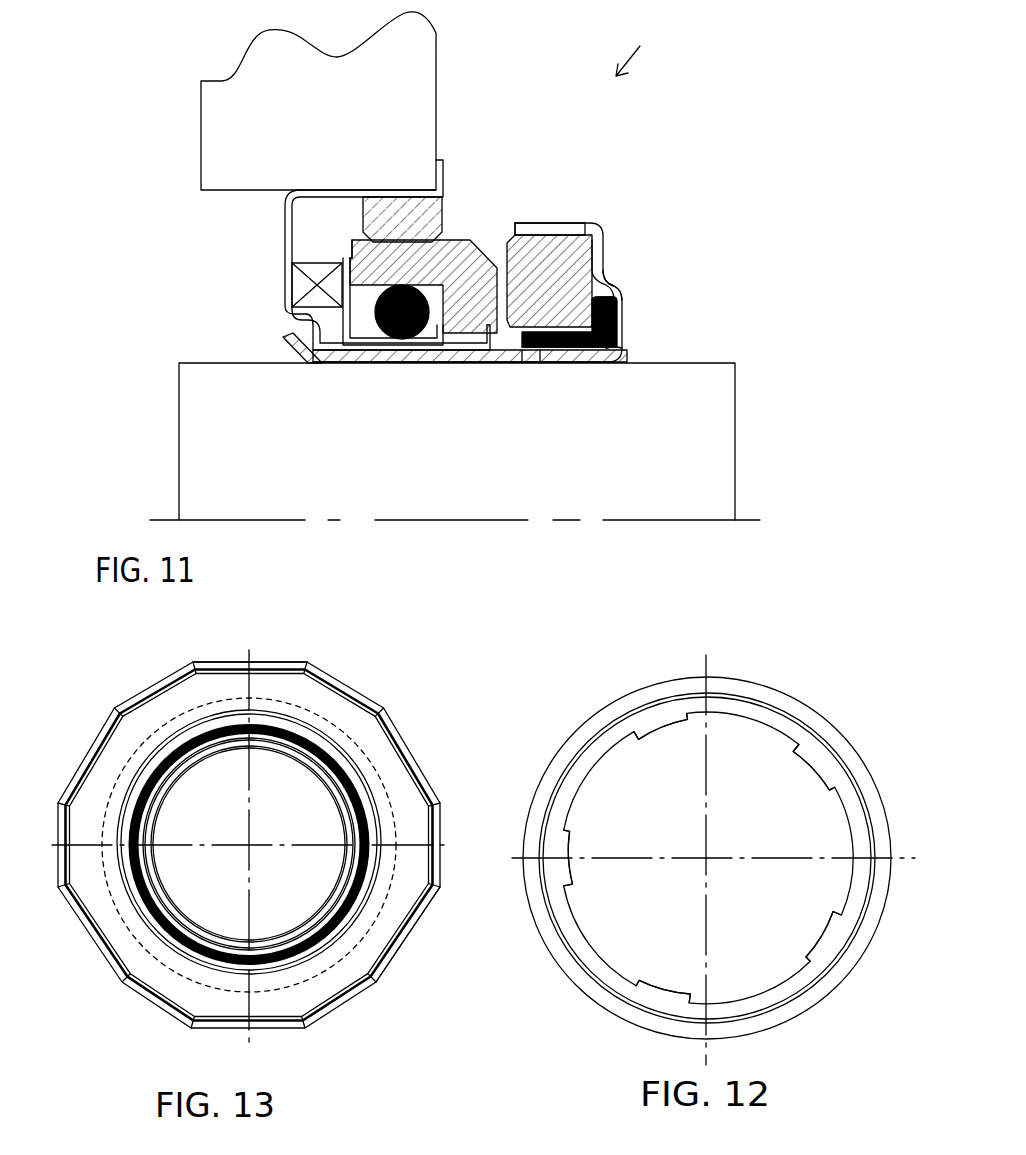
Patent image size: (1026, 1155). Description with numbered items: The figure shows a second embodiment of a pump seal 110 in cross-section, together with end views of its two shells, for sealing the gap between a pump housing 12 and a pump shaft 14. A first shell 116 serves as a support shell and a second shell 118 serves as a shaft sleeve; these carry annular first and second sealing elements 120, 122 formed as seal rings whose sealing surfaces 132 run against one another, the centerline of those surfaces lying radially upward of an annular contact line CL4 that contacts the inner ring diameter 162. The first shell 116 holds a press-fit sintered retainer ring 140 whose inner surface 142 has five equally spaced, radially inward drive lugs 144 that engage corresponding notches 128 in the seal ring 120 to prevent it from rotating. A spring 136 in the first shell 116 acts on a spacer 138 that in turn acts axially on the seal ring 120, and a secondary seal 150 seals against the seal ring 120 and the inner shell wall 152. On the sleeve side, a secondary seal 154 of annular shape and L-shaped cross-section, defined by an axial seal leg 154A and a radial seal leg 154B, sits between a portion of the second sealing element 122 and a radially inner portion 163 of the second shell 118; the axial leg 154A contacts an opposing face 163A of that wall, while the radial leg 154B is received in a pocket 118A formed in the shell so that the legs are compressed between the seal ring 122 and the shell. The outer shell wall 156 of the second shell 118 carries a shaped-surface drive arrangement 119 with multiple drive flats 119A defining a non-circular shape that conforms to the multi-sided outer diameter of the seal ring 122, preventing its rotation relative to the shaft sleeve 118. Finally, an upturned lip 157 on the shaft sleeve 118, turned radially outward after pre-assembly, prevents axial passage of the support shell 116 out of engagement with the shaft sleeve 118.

In FIG. 11, the pump housing 12 is at (422, 80).
In FIG. 11, the pump shaft 14 is at (707, 378).
In FIG. 11, the pump seal 110 is at (655, 48).
In FIG. 11, the first shell 116 is at (307, 190).
In FIG. 12, the first shell 116 is at (715, 682).
In FIG. 11, the second shell 118 is at (597, 262).
In FIG. 13, the second shell 118 is at (350, 682).
In FIG. 11, the pocket 118A is at (627, 340).
In FIG. 11, the shaped-surface drive arrangement 119 is at (601, 228).
In FIG. 13, the shaped-surface drive arrangement 119 is at (150, 685).
In FIG. 13, the drive flats 119A is at (283, 663).
In FIG. 11, the first sealing element 120 is at (467, 247).
In FIG. 11, the second sealing element 122 is at (605, 258).
In FIG. 11, the notches 128 is at (358, 253).
In FIG. 11, the sealing surfaces 132 is at (518, 223).
In FIG. 11, the spring 136 is at (298, 290).
In FIG. 11, the spacer 138 is at (288, 340).
In FIG. 11, the retainer ring 140 is at (406, 215).
In FIG. 12, the inner surface 142 is at (763, 733).
In FIG. 12, the drive lugs 144 is at (673, 727).
In FIG. 11, the secondary seal 150 is at (397, 343).
In FIG. 11, the inner shell wall 152 is at (447, 345).
In FIG. 11, the secondary seal 154 is at (618, 322).
In FIG. 13, the secondary seal 154 is at (300, 742).
In FIG. 11, the axial seal leg 154A is at (572, 353).
In FIG. 11, the radial seal leg 154B is at (618, 302).
In FIG. 11, the outer shell wall 156 is at (572, 246).
In FIG. 13, the outer shell wall 156 is at (212, 668).
In FIG. 11, the upturned lip 157 is at (343, 318).
In FIG. 13, the upturned lip 157 is at (200, 752).
In FIG. 11, the inner ring diameter 162 is at (525, 357).
In FIG. 11, the radially inner portion 163 is at (598, 353).
In FIG. 11, the opposing face 163A is at (632, 360).
In FIG. 11, the annular contact line CL4 is at (542, 353).